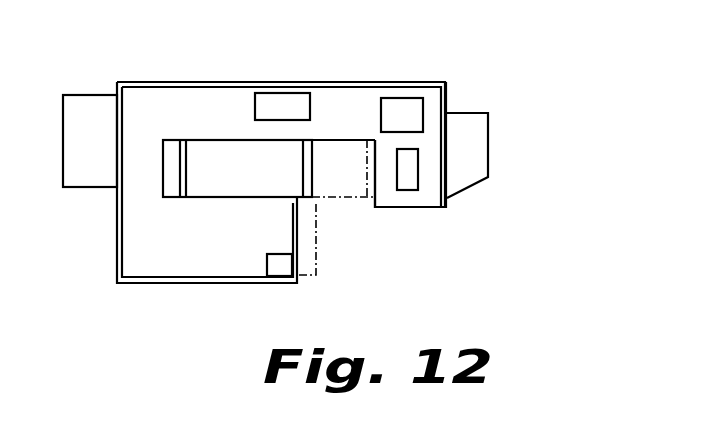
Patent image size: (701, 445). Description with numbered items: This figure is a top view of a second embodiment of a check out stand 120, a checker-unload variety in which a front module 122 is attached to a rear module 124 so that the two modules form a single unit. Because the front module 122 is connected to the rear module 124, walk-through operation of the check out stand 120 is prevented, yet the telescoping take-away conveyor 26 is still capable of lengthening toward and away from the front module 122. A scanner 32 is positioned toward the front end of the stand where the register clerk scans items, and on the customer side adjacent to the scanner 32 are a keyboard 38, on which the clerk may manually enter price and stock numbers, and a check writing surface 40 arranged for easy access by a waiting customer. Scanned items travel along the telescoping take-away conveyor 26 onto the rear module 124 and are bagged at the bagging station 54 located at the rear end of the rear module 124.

The check out stand 120 is at (553, 126).
The rear module 124 is at (207, 113).
The bagging station 54 is at (93, 107).
The telescoping take-away conveyor 26 is at (240, 183).
The check writing surface 40 is at (290, 110).
The keyboard 38 is at (401, 111).
The scanner 32 is at (410, 183).
The front module 122 is at (437, 195).